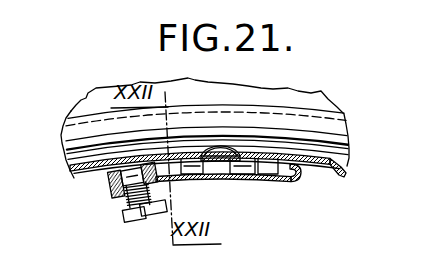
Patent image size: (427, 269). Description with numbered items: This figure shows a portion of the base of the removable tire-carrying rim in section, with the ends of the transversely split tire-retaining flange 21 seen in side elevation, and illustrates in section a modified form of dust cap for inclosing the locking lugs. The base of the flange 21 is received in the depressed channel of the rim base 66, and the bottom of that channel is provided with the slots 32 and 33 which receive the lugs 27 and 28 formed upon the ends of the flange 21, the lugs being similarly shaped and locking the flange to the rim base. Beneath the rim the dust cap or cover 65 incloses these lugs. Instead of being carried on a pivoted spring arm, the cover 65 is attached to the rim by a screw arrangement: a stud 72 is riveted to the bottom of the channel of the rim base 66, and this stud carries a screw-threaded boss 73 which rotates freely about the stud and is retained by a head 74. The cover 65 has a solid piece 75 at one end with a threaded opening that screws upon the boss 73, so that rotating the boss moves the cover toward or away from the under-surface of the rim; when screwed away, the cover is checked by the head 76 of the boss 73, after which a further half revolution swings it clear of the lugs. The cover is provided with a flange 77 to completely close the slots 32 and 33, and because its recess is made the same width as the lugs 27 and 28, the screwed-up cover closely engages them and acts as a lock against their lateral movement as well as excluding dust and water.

The transversely split tire-retaining flange 21 is at (340, 129).
The lug 27 is at (197, 154).
The lug 28 is at (251, 175).
The slot 32 is at (185, 135).
The slot 33 is at (262, 152).
The dust cap or cover 65 is at (222, 172).
The rim base 66 is at (338, 168).
The stud 72 is at (105, 152).
The screw-threaded boss 73 is at (113, 192).
The head 74 is at (129, 217).
The solid piece 75 is at (100, 176).
The head of the boss 76 is at (110, 214).
The flange 77 is at (298, 163).